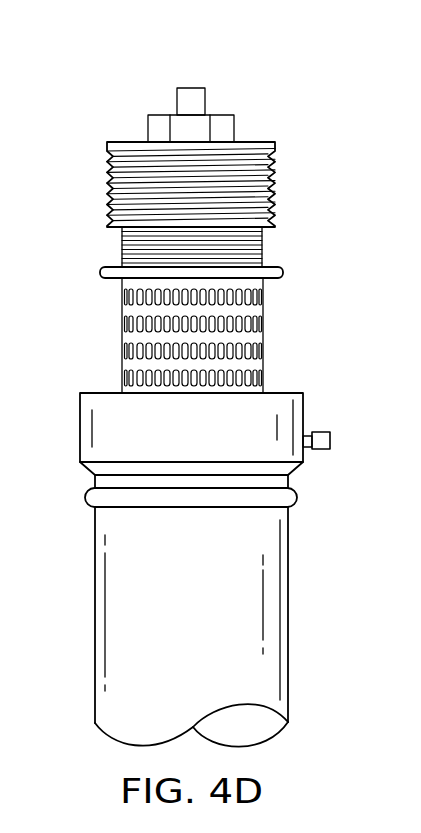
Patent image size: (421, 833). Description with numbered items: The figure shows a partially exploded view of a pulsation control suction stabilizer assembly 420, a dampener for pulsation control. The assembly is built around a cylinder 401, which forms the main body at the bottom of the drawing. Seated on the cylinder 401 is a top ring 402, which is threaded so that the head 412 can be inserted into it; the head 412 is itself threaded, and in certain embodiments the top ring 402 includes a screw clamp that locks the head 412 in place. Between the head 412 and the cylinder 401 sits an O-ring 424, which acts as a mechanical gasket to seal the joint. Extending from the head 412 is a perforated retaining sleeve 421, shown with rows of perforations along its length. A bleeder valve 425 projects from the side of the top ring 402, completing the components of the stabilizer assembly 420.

The pulsation control suction stabilizer assembly 420 is at (88, 60).
The head 412 is at (255, 142).
The O-ring 424 is at (283, 271).
The perforated retaining sleeve 421 is at (122, 333).
The top ring 402 is at (80, 427).
The bleeder valve 425 is at (332, 441).
The cylinder 401 is at (288, 612).